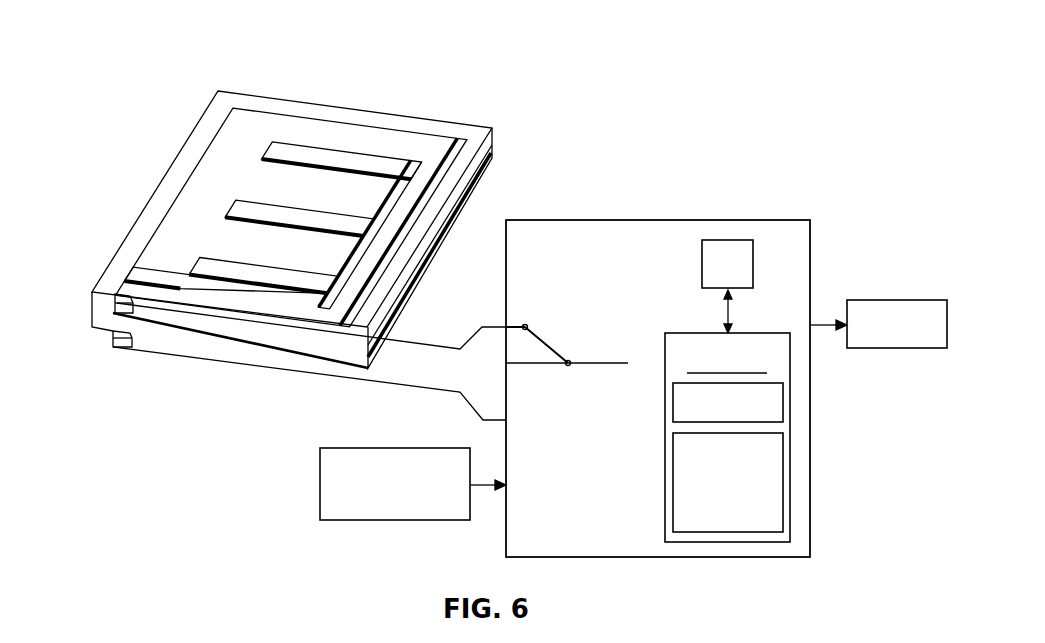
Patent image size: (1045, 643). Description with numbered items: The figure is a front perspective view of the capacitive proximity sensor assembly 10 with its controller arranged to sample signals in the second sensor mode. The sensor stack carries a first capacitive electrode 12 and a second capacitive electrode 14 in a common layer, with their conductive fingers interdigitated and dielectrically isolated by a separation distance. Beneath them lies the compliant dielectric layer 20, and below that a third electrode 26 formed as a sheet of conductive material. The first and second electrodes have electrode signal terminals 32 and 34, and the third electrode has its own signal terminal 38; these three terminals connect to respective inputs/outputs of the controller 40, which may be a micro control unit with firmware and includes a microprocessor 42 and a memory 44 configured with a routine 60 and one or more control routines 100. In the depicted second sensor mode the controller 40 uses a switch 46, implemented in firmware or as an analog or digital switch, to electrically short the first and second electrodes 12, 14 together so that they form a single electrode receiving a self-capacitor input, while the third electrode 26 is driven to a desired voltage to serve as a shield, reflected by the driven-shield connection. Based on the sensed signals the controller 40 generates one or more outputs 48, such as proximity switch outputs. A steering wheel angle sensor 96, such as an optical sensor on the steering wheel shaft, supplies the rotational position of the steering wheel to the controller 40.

The capacitive proximity sensor assembly 10 is at (102, 146).
The first capacitive electrode 12 is at (262, 112).
The second capacitive electrode 14 is at (380, 177).
The compliant dielectric layer 20 is at (493, 147).
The third electrode 26 is at (495, 158).
The electrode signal terminal 32 is at (115, 300).
The electrode signal terminal 34 is at (300, 327).
The signal terminal 38 is at (115, 338).
The controller 40 is at (783, 218).
The microprocessor 42 is at (755, 256).
The memory 44 is at (792, 373).
The switch 46 is at (526, 327).
The outputs 48 is at (897, 298).
The routine 60 is at (784, 407).
The steering wheel angle sensor 96 is at (337, 448).
The control routine 100 is at (784, 486).